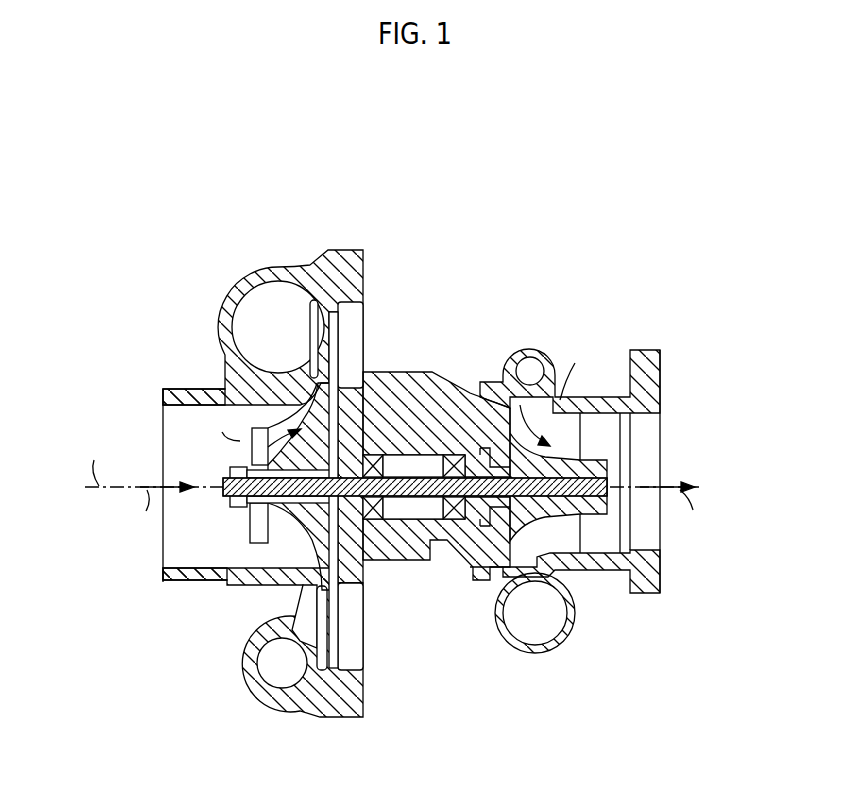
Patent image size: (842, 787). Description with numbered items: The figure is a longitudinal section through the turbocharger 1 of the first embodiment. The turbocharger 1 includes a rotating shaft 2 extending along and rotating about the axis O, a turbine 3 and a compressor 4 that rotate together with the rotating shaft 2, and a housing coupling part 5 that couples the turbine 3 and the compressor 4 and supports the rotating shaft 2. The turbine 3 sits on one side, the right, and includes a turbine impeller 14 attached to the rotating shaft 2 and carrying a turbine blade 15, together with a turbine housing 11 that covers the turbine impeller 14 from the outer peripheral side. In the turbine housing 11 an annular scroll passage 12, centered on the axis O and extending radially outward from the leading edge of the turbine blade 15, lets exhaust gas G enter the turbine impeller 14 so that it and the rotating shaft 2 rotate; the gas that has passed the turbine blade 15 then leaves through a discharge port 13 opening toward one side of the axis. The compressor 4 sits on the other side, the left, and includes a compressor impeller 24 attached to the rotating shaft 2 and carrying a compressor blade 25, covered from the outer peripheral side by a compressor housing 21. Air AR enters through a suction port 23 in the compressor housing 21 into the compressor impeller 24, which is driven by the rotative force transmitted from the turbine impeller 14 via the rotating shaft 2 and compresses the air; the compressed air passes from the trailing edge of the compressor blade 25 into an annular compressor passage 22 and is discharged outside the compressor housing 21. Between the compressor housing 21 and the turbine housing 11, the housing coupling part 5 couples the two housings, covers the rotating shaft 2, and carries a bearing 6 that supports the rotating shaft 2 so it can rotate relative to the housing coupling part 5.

The turbocharger 1 is at (405, 483).
The rotating shaft 2 is at (410, 500).
The turbine 3 is at (598, 541).
The compressor 4 is at (233, 507).
The housing coupling part 5 is at (420, 372).
The bearing 6 is at (373, 521).
The turbine housing 11 is at (598, 501).
The scroll passage 12 is at (535, 613).
The discharge port 13 is at (643, 418).
The turbine impeller 14 is at (607, 470).
The turbine blade 15 is at (570, 533).
The compressor housing 21 is at (233, 483).
The compressor passage 22 is at (257, 585).
The suction port 23 is at (163, 400).
The compressor impeller 24 is at (310, 533).
The compressor blade 25 is at (275, 530).